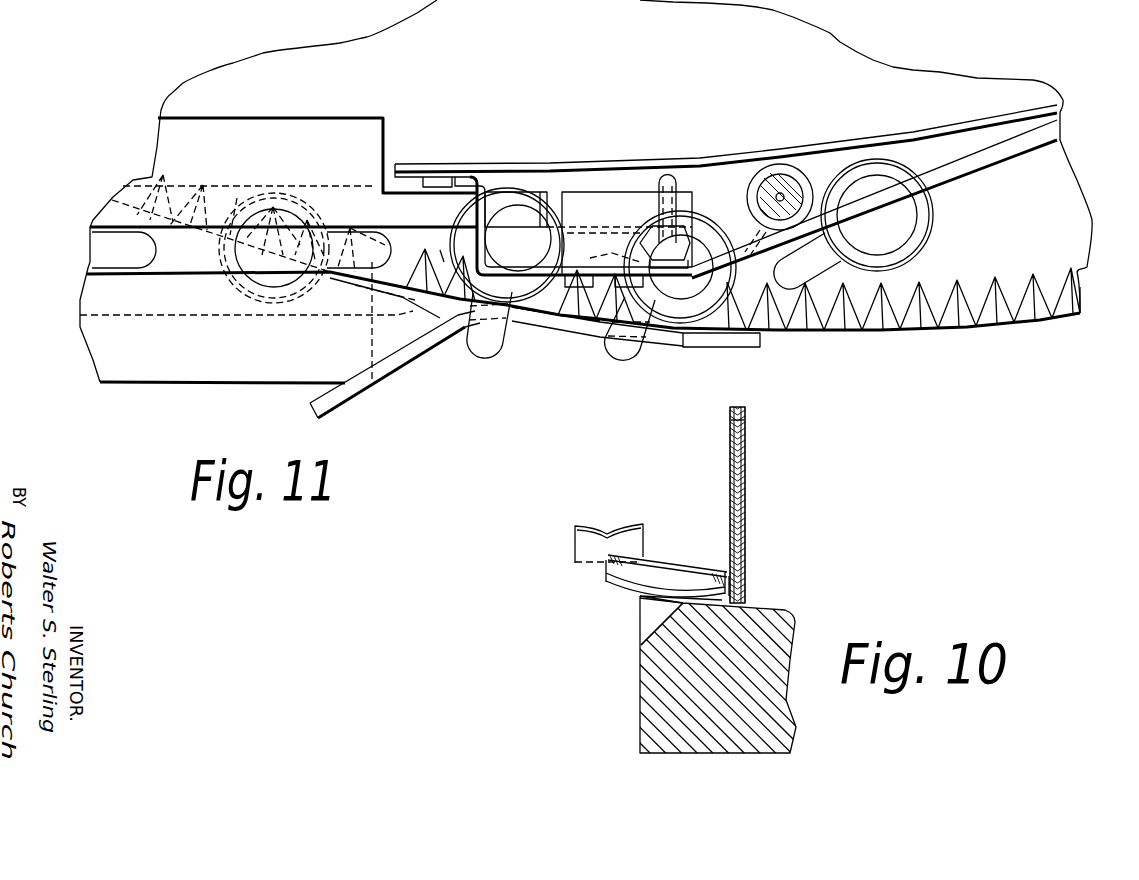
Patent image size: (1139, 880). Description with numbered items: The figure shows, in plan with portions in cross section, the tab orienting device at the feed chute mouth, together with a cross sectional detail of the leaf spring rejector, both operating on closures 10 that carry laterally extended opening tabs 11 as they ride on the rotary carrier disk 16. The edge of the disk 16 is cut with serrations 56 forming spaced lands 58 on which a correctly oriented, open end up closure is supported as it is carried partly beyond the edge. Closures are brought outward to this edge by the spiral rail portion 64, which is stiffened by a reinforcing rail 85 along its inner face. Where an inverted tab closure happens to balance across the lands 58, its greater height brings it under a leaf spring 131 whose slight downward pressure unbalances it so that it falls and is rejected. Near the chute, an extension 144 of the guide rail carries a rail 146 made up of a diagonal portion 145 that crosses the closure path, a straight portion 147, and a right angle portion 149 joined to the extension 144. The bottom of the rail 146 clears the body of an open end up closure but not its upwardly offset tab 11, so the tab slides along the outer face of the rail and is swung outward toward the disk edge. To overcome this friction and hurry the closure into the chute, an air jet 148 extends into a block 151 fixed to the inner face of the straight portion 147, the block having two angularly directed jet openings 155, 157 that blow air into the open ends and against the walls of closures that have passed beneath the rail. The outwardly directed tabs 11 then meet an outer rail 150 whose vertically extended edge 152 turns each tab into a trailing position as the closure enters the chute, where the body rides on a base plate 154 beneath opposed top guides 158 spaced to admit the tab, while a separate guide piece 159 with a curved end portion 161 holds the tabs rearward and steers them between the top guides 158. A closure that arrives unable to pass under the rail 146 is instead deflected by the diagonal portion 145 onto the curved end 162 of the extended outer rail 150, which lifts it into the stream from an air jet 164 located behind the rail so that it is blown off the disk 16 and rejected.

In FIG. 11, the closure 10 is at (547, 200).
In FIG. 10, the closure 10 is at (673, 560).
In FIG. 11, the opening tab 11 is at (360, 237).
In FIG. 11, the rotary carrier disk 16 is at (1088, 249).
In FIG. 10, the rotary carrier disk 16 is at (640, 713).
In FIG. 11, the serrations 56 is at (815, 328).
In FIG. 10, the serrations 56 is at (650, 628).
In FIG. 11, the lands 58 is at (908, 330).
In FIG. 10, the lands 58 is at (640, 598).
In FIG. 10, the spiral rail portion 64 is at (730, 450).
In FIG. 10, the reinforcing rail 85 is at (745, 450).
In FIG. 10, the leaf spring 131 is at (593, 527).
In FIG. 11, the extension of the guide rail 144 is at (920, 138).
In FIG. 11, the diagonal portion 145 is at (967, 172).
In FIG. 11, the rail 146 is at (1062, 126).
In FIG. 11, the straight portion 147 is at (598, 283).
In FIG. 11, the air jet 148 is at (647, 255).
In FIG. 11, the right angle portion 149 is at (478, 218).
In FIG. 11, the outer rail 150 is at (557, 338).
In FIG. 11, the block 151 is at (628, 192).
In FIG. 11, the vertically extended edge 152 is at (460, 328).
In FIG. 11, the base plate 154 is at (112, 275).
In FIG. 11, the jet opening 155 is at (578, 224).
In FIG. 11, the jet opening 157 is at (615, 253).
In FIG. 11, the top guides 158 is at (160, 135).
In FIG. 11, the guide piece 159 is at (265, 386).
In FIG. 11, the curved end portion 161 is at (440, 250).
In FIG. 11, the curved end 162 is at (723, 347).
In FIG. 11, the air jet 164 is at (770, 170).